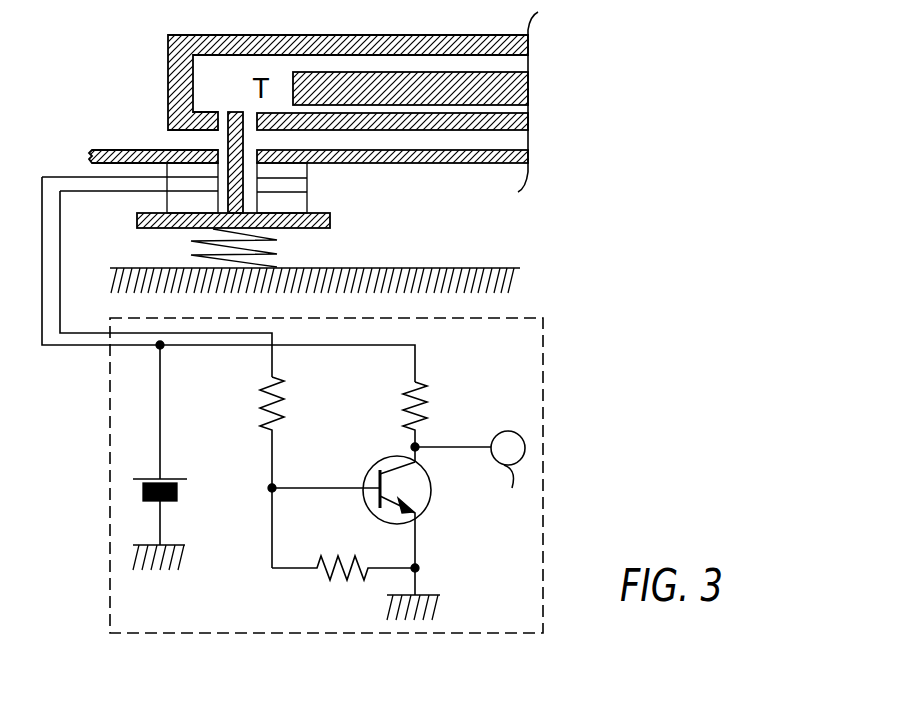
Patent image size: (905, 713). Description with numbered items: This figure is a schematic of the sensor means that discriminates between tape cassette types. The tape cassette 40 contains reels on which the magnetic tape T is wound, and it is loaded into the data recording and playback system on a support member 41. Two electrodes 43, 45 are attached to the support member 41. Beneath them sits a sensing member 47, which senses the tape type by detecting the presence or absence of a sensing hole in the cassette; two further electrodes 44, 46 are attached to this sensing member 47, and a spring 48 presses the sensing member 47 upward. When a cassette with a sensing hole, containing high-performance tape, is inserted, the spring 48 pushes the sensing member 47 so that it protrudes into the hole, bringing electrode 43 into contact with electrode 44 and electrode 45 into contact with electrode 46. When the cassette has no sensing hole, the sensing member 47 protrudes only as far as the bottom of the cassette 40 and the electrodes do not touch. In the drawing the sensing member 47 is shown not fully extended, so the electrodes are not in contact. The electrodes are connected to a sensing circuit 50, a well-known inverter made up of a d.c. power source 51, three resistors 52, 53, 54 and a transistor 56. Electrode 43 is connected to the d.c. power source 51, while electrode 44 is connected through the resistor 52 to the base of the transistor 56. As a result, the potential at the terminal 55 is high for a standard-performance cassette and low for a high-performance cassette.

The tape cassette 40 is at (525, 50).
The support member 41 is at (478, 181).
The electrode 43 is at (175, 166).
The electrode 44 is at (167, 200).
The electrode 45 is at (307, 178).
The electrode 46 is at (307, 192).
The sensing member 47 is at (313, 229).
The spring 48 is at (191, 253).
The sensing circuit 50 is at (543, 428).
The d.c. power source 51 is at (143, 490).
The resistor 52 is at (287, 472).
The resistor 53 is at (343, 584).
The resistor 54 is at (429, 422).
The terminal 55 is at (470, 474).
The transistor 56 is at (363, 538).